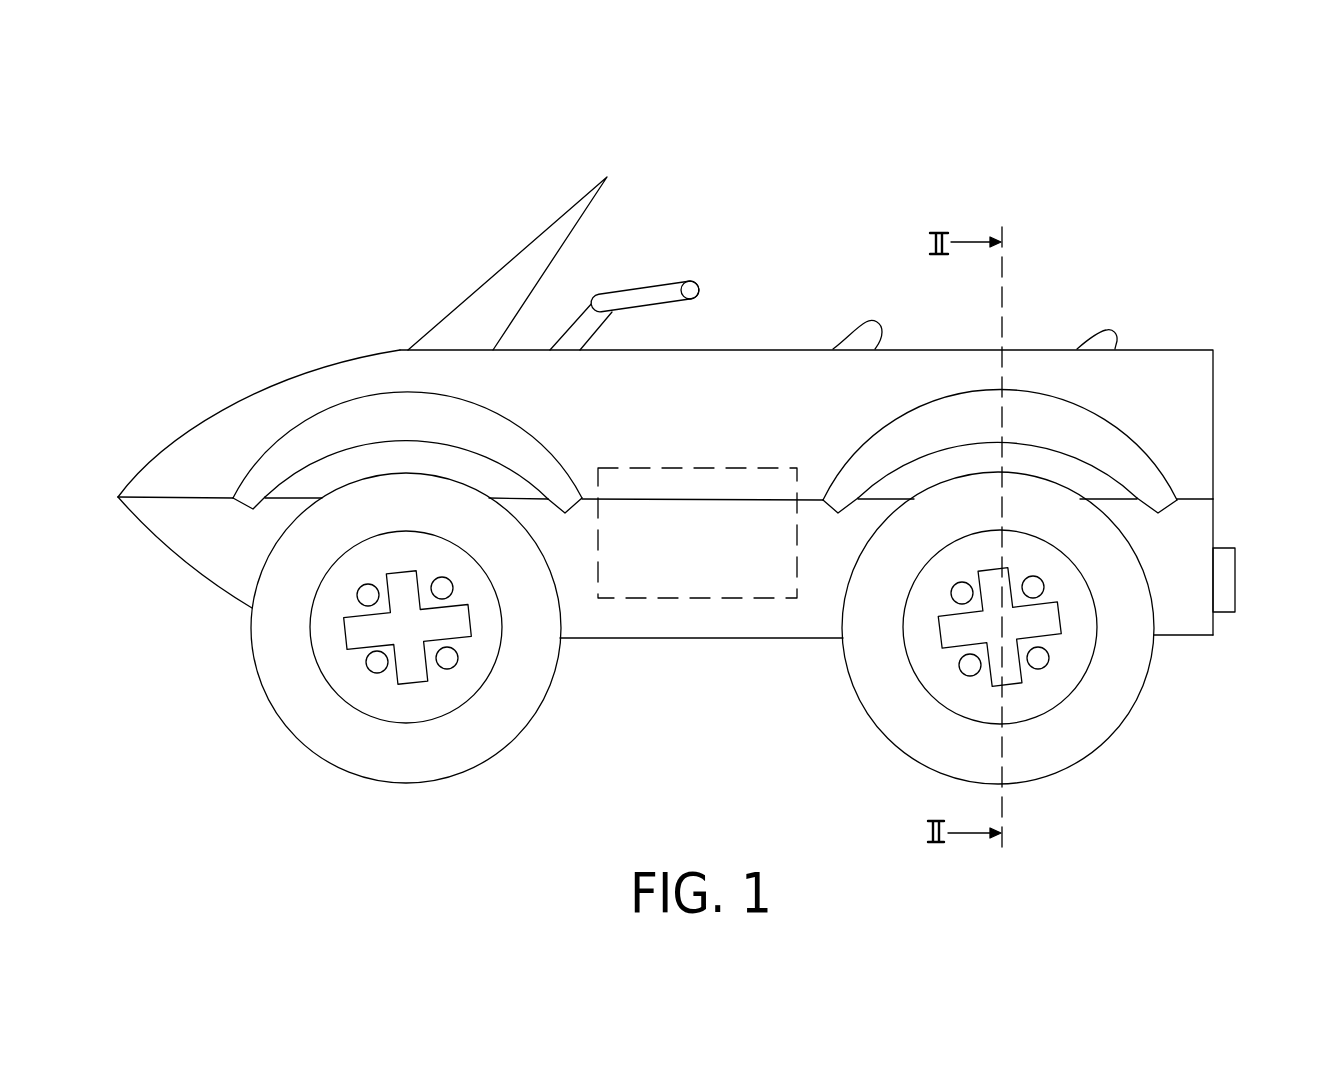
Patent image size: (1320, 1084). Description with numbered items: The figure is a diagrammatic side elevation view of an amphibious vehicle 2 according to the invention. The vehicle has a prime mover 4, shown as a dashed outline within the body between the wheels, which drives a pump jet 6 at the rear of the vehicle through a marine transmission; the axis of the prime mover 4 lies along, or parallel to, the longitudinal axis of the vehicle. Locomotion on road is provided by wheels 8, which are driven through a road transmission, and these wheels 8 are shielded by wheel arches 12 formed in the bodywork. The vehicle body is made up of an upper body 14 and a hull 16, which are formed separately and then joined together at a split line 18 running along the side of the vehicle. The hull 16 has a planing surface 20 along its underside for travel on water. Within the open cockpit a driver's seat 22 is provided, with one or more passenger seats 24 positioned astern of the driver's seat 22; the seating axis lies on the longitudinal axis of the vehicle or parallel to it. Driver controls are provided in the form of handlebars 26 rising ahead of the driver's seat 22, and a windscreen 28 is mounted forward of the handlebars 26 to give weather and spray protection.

The amphibious vehicle 2 is at (1031, 203).
The prime mover 4 is at (709, 547).
The pump jet 6 is at (1235, 578).
The wheels 8 is at (448, 688).
The wheel arches 12 is at (300, 442).
The upper body 14 is at (1190, 362).
The hull 16 is at (1192, 518).
The split line 18 is at (1213, 494).
The planing surface 20 is at (1195, 637).
The driver's seat 22 is at (880, 330).
The passenger seats 24 is at (1113, 333).
The handlebars 26 is at (698, 287).
The windscreen 28 is at (532, 250).